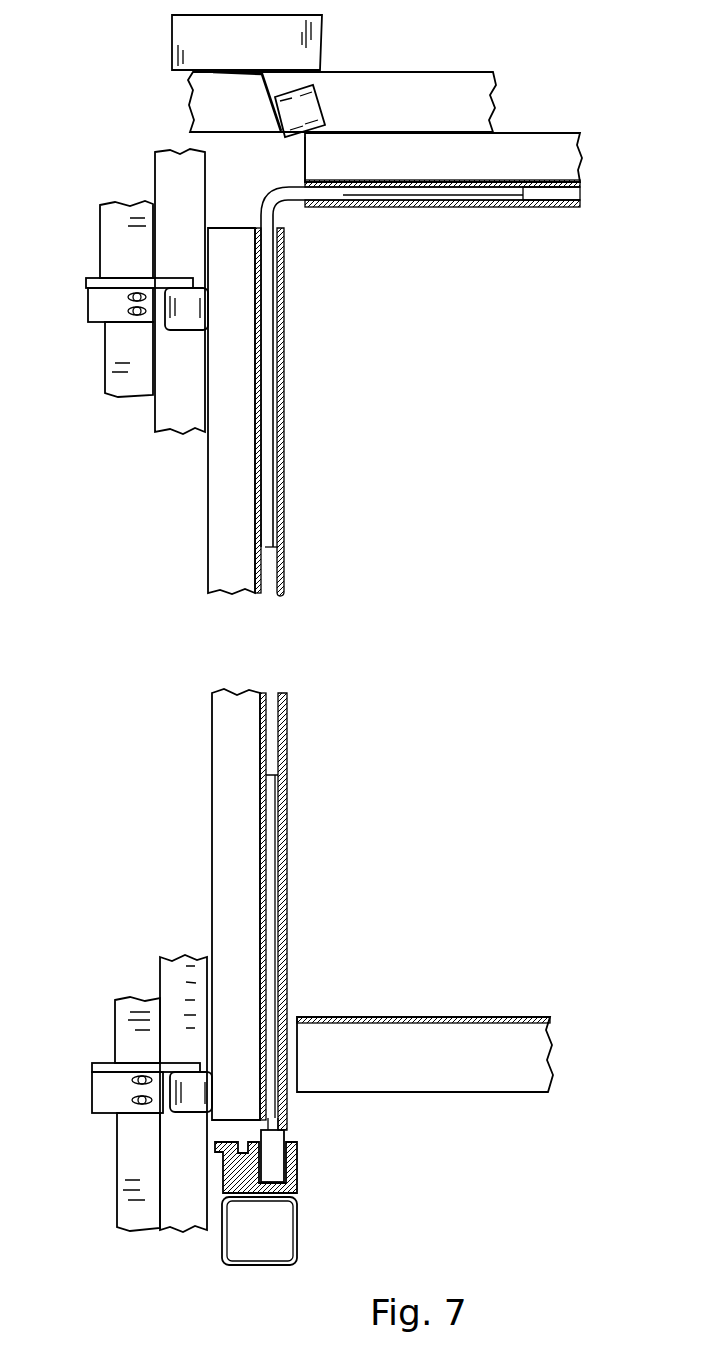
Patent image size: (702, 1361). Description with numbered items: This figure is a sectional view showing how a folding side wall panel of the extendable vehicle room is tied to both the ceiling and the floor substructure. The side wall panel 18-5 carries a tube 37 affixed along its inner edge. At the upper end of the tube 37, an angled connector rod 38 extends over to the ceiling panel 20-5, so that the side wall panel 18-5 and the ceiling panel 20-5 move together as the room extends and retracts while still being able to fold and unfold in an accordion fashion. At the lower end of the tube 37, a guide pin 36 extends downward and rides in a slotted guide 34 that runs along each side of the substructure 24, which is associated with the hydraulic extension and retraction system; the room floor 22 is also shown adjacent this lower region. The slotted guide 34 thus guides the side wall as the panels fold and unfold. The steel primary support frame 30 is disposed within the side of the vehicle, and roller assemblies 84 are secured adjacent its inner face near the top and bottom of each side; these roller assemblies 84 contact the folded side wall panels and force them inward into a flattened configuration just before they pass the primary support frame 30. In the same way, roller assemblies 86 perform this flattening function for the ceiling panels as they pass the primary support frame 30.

The primary support frame 30 is at (410, 93).
The roller assemblies 86 is at (260, 83).
The folding ceiling panel 20-5 is at (533, 150).
The angled connector rod 38 is at (278, 203).
The folding side panel 18-5 is at (213, 528).
The tube 37 is at (285, 573).
The roller assemblies 84 is at (88, 322).
The room floor 22 is at (468, 1055).
The slotted guide 34 is at (297, 1178).
The guide pin 36 is at (283, 1133).
The substructure 24 is at (295, 1235).